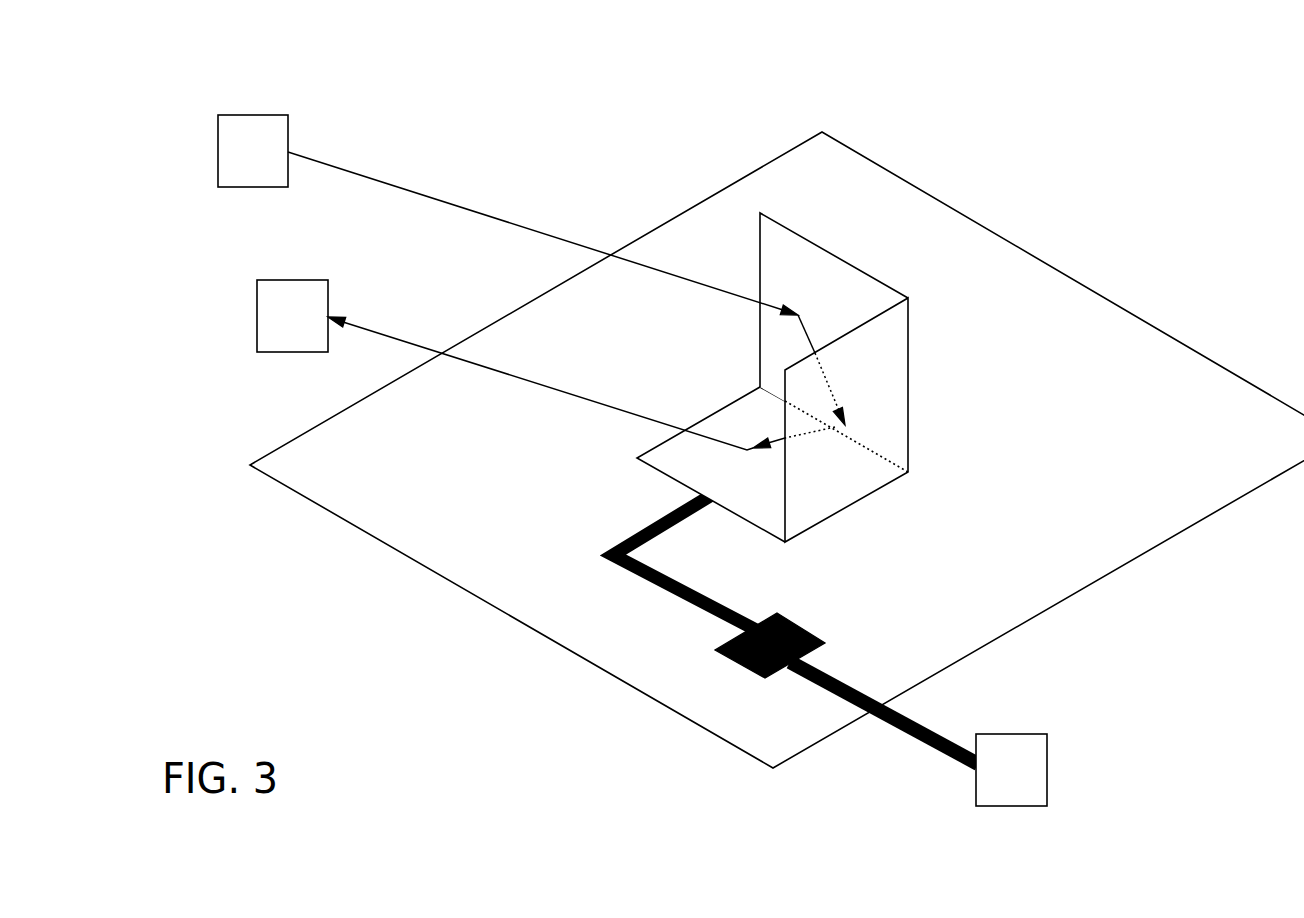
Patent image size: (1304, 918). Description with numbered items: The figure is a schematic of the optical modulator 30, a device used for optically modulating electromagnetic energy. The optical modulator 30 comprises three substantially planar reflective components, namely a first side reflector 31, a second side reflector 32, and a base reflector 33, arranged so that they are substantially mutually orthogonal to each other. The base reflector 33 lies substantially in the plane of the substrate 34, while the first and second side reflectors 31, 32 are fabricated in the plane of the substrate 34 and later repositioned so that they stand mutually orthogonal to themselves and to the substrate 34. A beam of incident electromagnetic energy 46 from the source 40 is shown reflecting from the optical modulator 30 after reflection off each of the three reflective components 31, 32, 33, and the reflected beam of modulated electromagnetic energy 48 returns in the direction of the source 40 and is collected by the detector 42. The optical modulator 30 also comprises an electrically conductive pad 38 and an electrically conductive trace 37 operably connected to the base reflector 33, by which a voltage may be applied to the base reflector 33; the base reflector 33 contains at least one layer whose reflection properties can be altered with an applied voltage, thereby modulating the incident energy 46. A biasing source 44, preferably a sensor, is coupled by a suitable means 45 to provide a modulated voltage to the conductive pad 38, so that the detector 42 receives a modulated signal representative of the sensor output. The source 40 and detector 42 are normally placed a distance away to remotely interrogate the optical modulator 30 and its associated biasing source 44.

The optical modulator 30 is at (893, 125).
The first side reflector 31 is at (861, 387).
The second side reflector 32 is at (783, 290).
The base reflector 33 is at (731, 493).
The substrate 34 is at (557, 644).
The electrically conductive trace 37 is at (657, 590).
The electrically conductive pad 38 is at (800, 627).
The source 40 is at (255, 115).
The detector 42 is at (257, 320).
The biasing source 44 is at (1047, 770).
The suitable means 45 is at (827, 690).
The beam of incident electromagnetic energy 46 is at (470, 205).
The reflected beam of modulated electromagnetic energy 48 is at (415, 342).